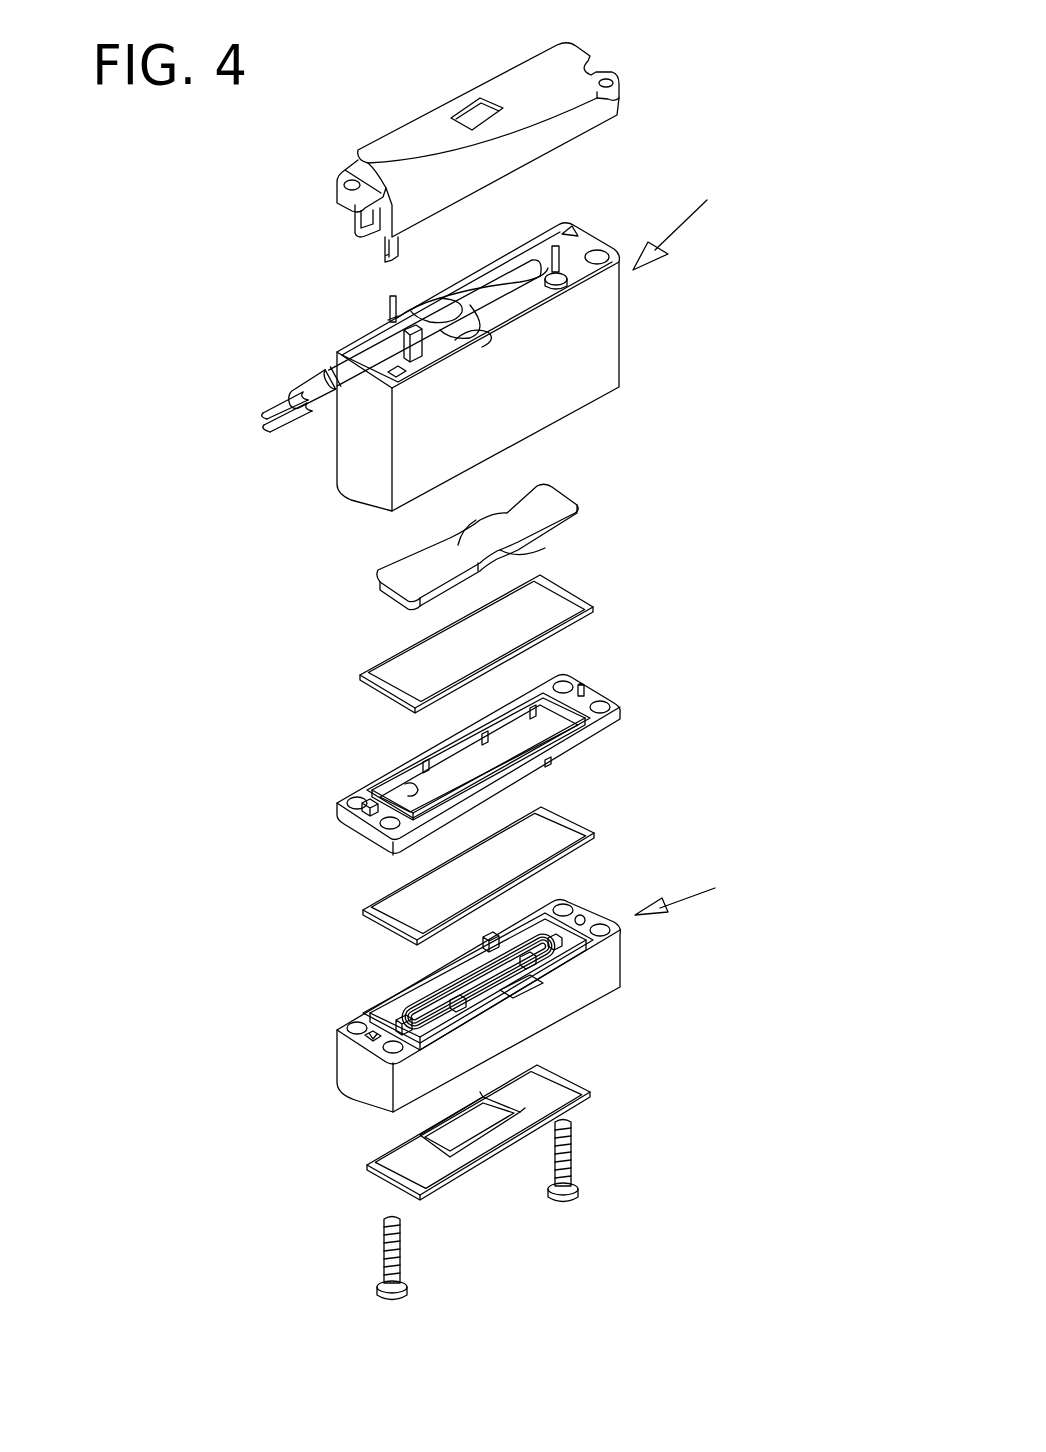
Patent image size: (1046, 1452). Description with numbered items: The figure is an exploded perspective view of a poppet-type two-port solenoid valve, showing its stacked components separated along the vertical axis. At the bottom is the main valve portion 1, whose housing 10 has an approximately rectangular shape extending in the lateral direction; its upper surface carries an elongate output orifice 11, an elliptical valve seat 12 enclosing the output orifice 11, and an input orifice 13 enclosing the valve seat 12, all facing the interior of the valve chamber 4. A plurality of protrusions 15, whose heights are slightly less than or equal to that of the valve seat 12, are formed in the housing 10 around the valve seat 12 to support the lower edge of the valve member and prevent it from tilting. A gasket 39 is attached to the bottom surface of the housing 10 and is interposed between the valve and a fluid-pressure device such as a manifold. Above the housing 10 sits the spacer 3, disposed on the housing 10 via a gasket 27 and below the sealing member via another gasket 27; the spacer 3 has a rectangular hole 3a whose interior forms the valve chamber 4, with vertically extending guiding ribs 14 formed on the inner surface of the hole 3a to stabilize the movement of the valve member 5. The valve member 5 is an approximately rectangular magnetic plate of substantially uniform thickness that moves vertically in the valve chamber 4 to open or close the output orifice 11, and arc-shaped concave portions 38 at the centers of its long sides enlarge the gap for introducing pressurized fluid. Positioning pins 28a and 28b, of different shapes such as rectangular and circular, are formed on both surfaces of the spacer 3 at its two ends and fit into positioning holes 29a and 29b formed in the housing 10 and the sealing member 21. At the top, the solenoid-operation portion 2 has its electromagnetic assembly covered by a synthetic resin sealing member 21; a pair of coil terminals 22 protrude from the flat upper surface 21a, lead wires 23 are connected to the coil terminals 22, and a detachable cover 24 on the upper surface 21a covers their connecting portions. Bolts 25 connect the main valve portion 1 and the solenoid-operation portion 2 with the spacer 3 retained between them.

The main valve portion 1 is at (682, 882).
The solenoid-operation portion 2 is at (678, 214).
The spacer 3 is at (478, 754).
The rectangular hole 3a is at (413, 787).
The valve chamber 4 is at (540, 727).
The valve member 5 is at (535, 497).
The housing 10 is at (479, 981).
The output orifice 11 is at (530, 957).
The valve seat 12 is at (513, 973).
The input orifice 13 is at (447, 977).
The guiding ribs 14 is at (487, 733).
The protrusions 15 is at (487, 943).
The sealing member 21 is at (518, 337).
The upper surface of the sealing member 21a is at (580, 242).
The coil terminals 22 is at (553, 250).
The lead wires 23 is at (305, 384).
The cover 24 is at (420, 112).
The bolts 25 is at (573, 1150).
The gasket 27 is at (578, 590).
The positioning pin 28a is at (367, 807).
The positioning pin 28b is at (583, 690).
The positioning hole 29a is at (362, 1040).
The positioning hole 29b is at (583, 915).
The concave portions 38 is at (457, 530).
The gasket 39 is at (590, 1092).